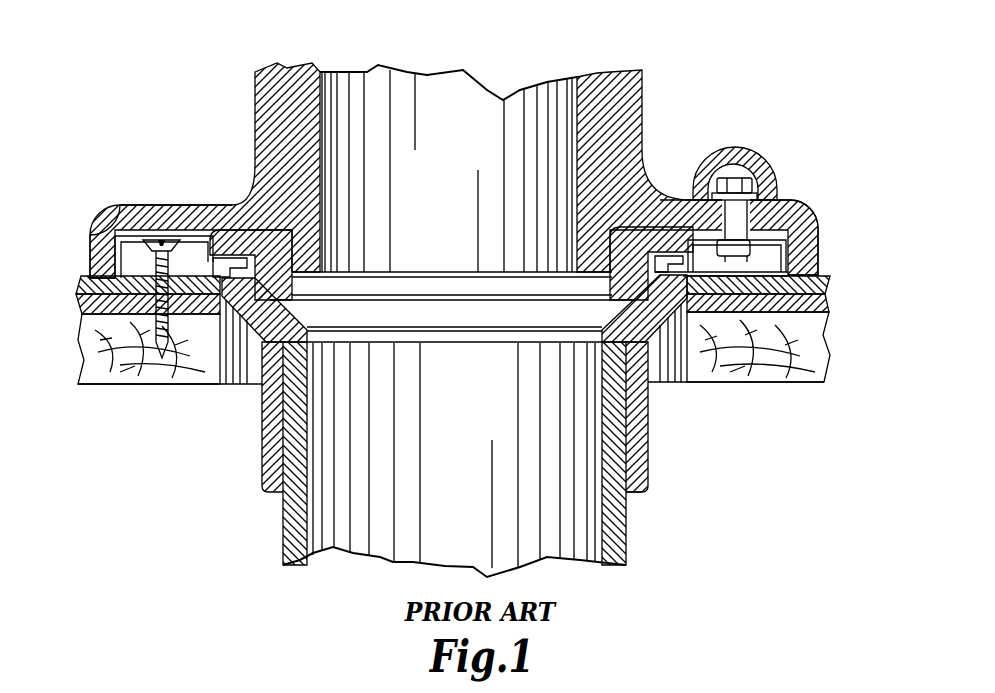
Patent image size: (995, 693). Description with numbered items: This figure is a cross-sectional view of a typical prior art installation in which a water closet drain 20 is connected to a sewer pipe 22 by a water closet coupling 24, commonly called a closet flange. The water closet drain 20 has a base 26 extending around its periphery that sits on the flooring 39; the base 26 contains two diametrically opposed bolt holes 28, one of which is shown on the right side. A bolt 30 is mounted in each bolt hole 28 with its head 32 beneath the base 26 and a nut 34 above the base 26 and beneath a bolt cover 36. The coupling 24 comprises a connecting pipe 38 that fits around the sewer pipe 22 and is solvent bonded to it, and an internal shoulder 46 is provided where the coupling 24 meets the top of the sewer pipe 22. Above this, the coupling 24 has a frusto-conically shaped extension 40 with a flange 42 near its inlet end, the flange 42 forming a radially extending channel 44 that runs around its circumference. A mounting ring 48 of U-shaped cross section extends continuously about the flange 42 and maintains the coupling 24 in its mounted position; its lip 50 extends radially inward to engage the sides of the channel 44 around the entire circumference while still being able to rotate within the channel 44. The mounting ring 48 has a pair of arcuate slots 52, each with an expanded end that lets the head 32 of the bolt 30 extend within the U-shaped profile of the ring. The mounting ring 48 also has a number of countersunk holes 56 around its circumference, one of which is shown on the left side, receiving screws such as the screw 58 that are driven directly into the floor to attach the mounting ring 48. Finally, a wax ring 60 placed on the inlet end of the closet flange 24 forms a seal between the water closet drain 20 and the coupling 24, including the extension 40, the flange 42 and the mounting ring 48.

The water closet drain 20 is at (487, 70).
The sewer pipe 22 is at (432, 488).
The water closet coupling 24 is at (662, 452).
The base 26 is at (100, 215).
The bolt hole 28 is at (753, 214).
The bolt 30 is at (790, 236).
The head 32 is at (684, 276).
The nut 34 is at (748, 178).
The bolt cover 36 is at (705, 152).
The connecting pipe 38 is at (652, 482).
The flooring 39 is at (828, 338).
The frusto-conically shaped extension 40 is at (250, 300).
The flange 42 is at (229, 255).
The channel 44 is at (213, 384).
The internal shoulder 46 is at (645, 378).
The mounting ring 48 is at (113, 252).
The lip 50 is at (688, 222).
The arcuate slot 52 is at (678, 261).
The hole 56 is at (142, 238).
The screw 58 is at (150, 267).
The wax ring 60 is at (268, 300).